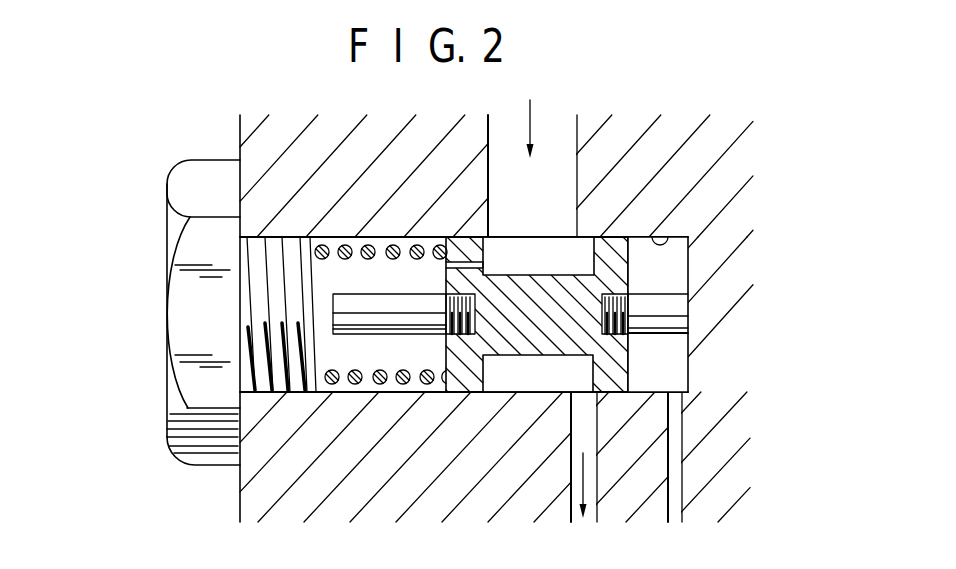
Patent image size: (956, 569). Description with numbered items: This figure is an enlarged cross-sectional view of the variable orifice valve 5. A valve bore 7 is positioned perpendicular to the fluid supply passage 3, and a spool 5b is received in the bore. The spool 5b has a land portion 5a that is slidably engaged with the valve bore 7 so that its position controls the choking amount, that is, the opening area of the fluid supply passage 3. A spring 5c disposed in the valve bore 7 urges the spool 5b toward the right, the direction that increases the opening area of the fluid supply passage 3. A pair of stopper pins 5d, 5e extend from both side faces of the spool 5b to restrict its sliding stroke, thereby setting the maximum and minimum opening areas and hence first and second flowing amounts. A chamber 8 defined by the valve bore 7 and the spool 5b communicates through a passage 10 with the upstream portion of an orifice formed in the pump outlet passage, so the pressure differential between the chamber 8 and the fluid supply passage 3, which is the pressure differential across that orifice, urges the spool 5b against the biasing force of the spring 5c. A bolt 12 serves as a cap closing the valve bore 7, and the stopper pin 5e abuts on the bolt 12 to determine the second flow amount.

The variable orifice valve 5 is at (664, 163).
The fluid supply passage 3 is at (555, 182).
The valve bore 7 is at (662, 243).
The chamber 8 is at (661, 358).
The passage 10 is at (668, 482).
The bolt 12 is at (178, 300).
The land portion 5a is at (594, 394).
The spool 5b is at (534, 362).
The spring 5c is at (422, 386).
The stopper pin 5d is at (668, 310).
The stopper pin 5e is at (397, 317).